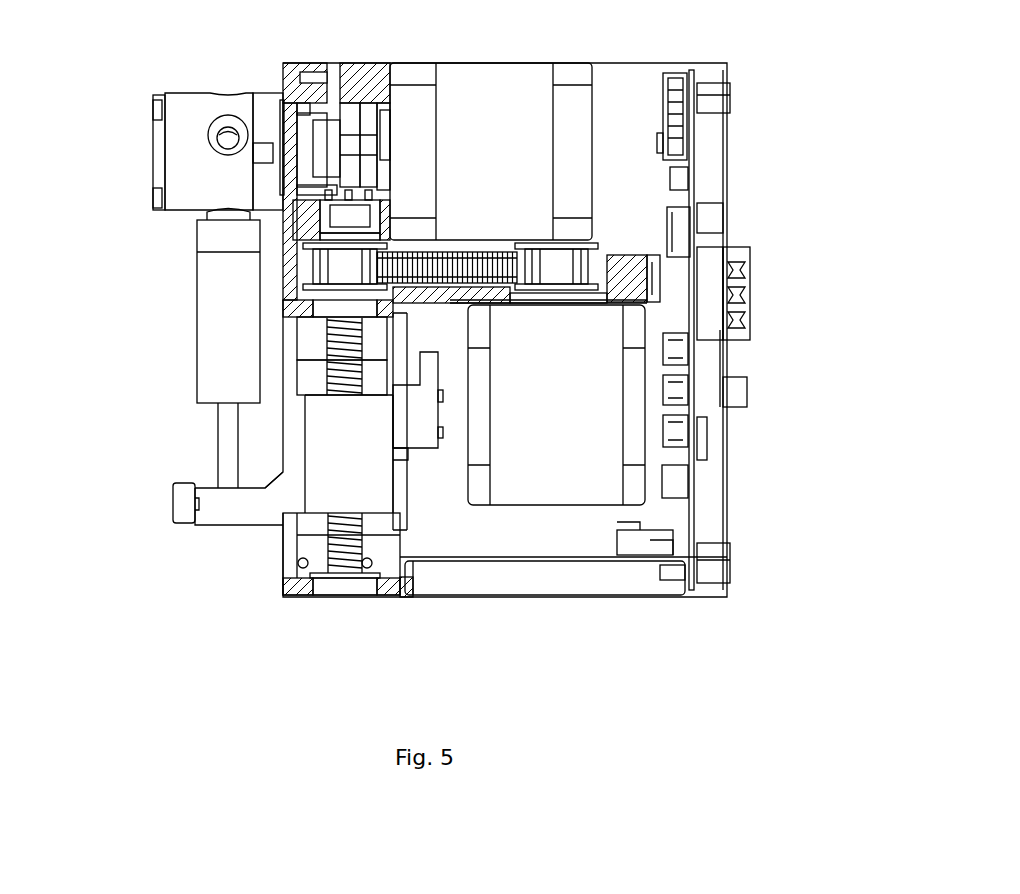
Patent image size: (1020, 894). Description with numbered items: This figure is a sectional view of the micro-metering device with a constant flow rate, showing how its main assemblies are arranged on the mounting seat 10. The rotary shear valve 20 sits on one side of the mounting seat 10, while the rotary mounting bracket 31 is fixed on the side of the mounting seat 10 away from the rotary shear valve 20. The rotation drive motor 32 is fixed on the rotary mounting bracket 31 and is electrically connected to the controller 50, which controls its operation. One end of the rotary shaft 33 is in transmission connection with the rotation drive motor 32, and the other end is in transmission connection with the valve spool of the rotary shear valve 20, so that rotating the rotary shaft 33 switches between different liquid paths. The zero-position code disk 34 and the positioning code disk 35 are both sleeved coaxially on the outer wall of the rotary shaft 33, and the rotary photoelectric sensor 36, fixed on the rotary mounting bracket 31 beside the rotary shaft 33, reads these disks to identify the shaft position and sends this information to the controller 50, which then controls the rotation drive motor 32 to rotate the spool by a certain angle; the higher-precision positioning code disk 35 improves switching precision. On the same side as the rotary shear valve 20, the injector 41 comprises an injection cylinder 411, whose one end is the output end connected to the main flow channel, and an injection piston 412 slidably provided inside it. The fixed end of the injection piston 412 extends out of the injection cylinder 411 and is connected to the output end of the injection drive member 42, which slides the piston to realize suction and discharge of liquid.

The mounting seat 10 is at (290, 545).
The rotary shear valve 20 is at (188, 187).
The rotary mounting bracket 31 is at (353, 80).
The rotation drive motor 32 is at (527, 163).
The rotary shaft 33 is at (322, 133).
The zero-position code disk 34 is at (330, 145).
The positioning code disk 35 is at (393, 103).
The rotary photoelectric sensor 36 is at (385, 198).
The injector 41 is at (170, 372).
The injection cylinder 411 is at (220, 350).
The injection piston 412 is at (232, 450).
The injection drive member 42 is at (507, 523).
The controller 50 is at (680, 137).